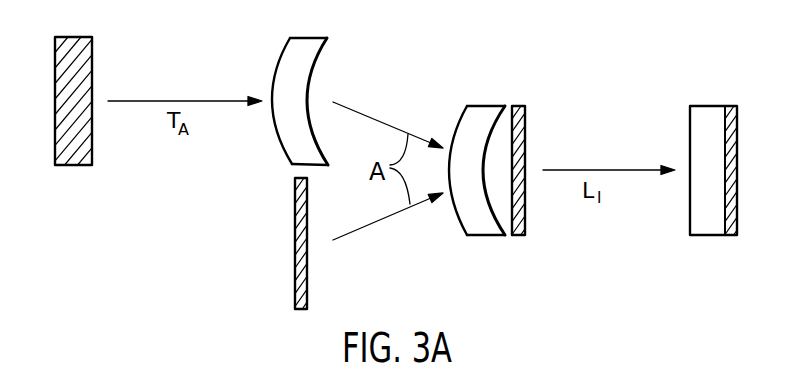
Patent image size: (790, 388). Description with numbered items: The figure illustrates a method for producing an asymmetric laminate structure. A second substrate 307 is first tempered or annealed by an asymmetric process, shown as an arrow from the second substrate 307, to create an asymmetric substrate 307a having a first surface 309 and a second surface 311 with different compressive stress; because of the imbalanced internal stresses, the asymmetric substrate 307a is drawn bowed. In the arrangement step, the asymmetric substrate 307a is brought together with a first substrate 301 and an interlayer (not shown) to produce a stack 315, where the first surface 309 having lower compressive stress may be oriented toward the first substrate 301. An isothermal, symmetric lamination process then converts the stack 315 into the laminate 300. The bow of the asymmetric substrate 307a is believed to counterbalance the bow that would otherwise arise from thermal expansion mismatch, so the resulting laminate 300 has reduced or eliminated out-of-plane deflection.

The laminate 300 is at (713, 236).
The first substrate 301 is at (294, 250).
The second substrate 307 is at (69, 166).
The asymmetric substrate 307a is at (300, 105).
The first surface 309 is at (318, 58).
The second surface 311 is at (280, 54).
The stack 315 is at (527, 243).